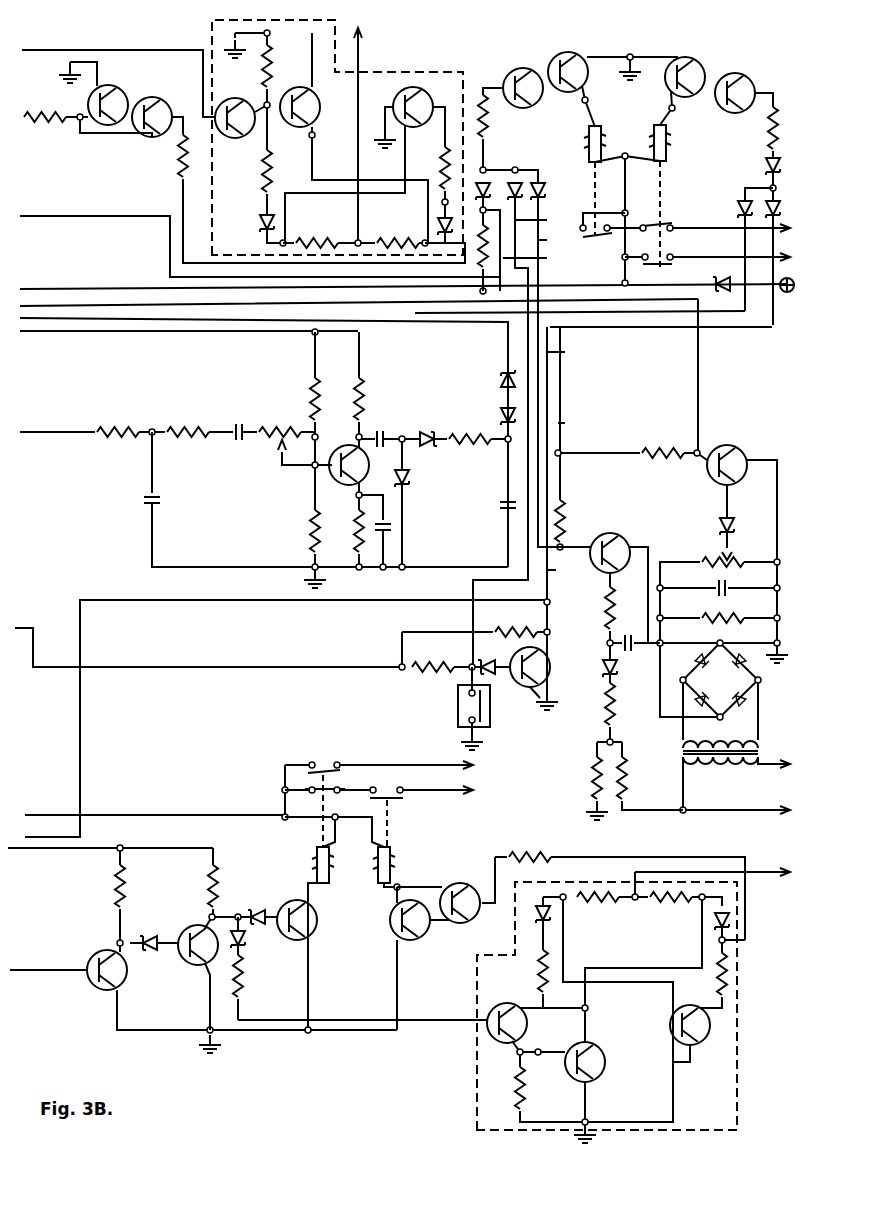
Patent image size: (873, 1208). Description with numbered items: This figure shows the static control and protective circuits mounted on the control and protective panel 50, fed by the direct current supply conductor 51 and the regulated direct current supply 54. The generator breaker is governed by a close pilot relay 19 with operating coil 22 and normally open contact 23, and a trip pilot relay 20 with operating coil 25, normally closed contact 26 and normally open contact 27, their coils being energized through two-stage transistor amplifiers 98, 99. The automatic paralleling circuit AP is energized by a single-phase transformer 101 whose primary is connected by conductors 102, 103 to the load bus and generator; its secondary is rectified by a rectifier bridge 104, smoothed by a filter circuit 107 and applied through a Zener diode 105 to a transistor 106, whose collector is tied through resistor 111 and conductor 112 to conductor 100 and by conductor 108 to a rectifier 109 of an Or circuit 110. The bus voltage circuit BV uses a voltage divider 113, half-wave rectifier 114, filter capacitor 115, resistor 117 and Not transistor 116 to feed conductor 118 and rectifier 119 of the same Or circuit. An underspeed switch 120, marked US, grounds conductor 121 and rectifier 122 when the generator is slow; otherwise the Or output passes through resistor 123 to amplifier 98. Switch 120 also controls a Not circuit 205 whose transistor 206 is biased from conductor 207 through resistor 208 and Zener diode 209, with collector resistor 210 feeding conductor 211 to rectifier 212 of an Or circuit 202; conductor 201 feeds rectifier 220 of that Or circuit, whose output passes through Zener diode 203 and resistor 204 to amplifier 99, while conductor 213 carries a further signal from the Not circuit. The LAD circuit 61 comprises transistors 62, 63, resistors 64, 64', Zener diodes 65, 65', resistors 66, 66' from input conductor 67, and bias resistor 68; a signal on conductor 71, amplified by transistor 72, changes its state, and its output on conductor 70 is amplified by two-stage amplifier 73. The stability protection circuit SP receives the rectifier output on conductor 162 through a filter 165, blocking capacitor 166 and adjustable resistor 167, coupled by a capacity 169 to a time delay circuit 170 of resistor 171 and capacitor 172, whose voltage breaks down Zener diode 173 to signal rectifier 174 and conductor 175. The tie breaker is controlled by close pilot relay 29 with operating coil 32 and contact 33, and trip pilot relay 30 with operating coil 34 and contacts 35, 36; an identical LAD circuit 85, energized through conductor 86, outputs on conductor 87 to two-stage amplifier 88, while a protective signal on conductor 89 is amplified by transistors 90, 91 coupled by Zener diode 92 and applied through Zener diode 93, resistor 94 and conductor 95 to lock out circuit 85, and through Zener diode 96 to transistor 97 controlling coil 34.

The conductor 71 is at (166, 51).
The two-stage transistor amplifier 73 is at (160, 94).
The tandem connected transistor 72 is at (244, 94).
The bias resistor 68 is at (272, 62).
The transistor 62 is at (308, 92).
The input conductor 67 is at (362, 48).
The static bistable circuit 61 is at (408, 68).
The transistor 63 is at (422, 93).
The resistor 64 is at (249, 171).
The resistor 64' is at (429, 163).
The Zener diode 65 is at (256, 220).
The Zener diode 65' is at (418, 217).
The resistor 66 is at (320, 231).
The resistor 66' is at (402, 231).
The conductor 70 is at (182, 192).
The direct current supply conductor 51 is at (92, 216).
The conductor 100 is at (112, 287).
The conductor 201 is at (88, 306).
The regulated direct current supply 54 is at (142, 333).
The conductor 162 is at (74, 431).
The blocking capacitor 166 is at (248, 422).
The adjustable resistor 167 is at (294, 422).
The filter 165 is at (190, 474).
The conductor 175 is at (416, 326).
The capacity 169 is at (376, 414).
The resistor 171 is at (464, 430).
The time delay circuit 170 is at (490, 479).
The capacitor 172 is at (498, 504).
The Zener diode 173 is at (500, 419).
The rectifier 174 is at (500, 382).
The two-stage transistor amplifier 98 is at (546, 54).
The two-stage transistor amplifier 99 is at (744, 64).
The resistor 123 is at (496, 118).
The operating coil 22 is at (584, 136).
The operating coil 25 is at (656, 136).
The resistor 204 is at (766, 130).
The Zener diode 203 is at (766, 165).
The Or circuit 202 is at (714, 194).
The rectifier 212 is at (791, 251).
The rectifier 220 is at (744, 212).
The rectifier 109 is at (486, 180).
The rectifier 122 is at (521, 180).
The Or circuit 110 is at (582, 182).
The rectifier 119 is at (546, 194).
The conductor 121 is at (466, 584).
The conductor 118 is at (570, 332).
The conductor 108 is at (698, 352).
The close pilot relay 19 is at (620, 194).
The trip pilot relay 20 is at (690, 194).
The normally closed contact 26 is at (664, 224).
The normally open contact 23 is at (596, 236).
The normally open contact 27 is at (668, 262).
The conductor 112 is at (575, 352).
The conductor 211 is at (752, 329).
The resistor 111 is at (668, 446).
The transistor 106 is at (734, 448).
The Zener diode 105 is at (734, 528).
The resistor 117 is at (572, 508).
The transistor 116 is at (610, 538).
The filter circuit 107 is at (700, 613).
The single-phase rectifier bridge 104 is at (735, 690).
The transistor 206 is at (580, 649).
The half-wave rectifier 114 is at (603, 667).
The filter capacitor 115 is at (636, 654).
The voltage divider 113 is at (605, 747).
The single-phase transformer 101 is at (676, 766).
The conductor 103 is at (766, 768).
The conductor 102 is at (734, 808).
The conductor 213 is at (348, 590).
The resistor 210 is at (478, 627).
The resistor 208 is at (450, 657).
The Not circuit 205 is at (508, 656).
The Zener diode 209 is at (496, 686).
The underspeed switch 120 is at (458, 711).
The conductor 207 is at (266, 661).
The normally open contact 36 is at (312, 760).
The normally closed contact 35 is at (324, 788).
The normally open contact 33 is at (370, 790).
The trip pilot relay 30 is at (303, 847).
The close pilot relay 29 is at (414, 847).
The operating coil 34 is at (314, 868).
The operating coil 32 is at (392, 866).
The conductor 87 is at (574, 860).
The conductor 86 is at (762, 870).
The static bistable circuit 85 is at (748, 992).
The two-stage transistor amplifier 88 is at (462, 953).
The transistor 97 is at (310, 932).
The Zener diode 96 is at (262, 910).
The Zener diode 93 is at (246, 944).
The resistor 94 is at (244, 986).
The Zener diode 92 is at (156, 934).
The transistor 91 is at (194, 928).
The transistor 90 is at (102, 964).
The conductor 89 is at (50, 965).
The conductor 95 is at (426, 1028).
The control and protective panel 50 is at (350, 1059).
The stability protection circuit SP is at (418, 387).
The automatic paralleling circuit AP is at (712, 550).
The bus voltage circuit BV is at (596, 596).
The switch US is at (522, 724).